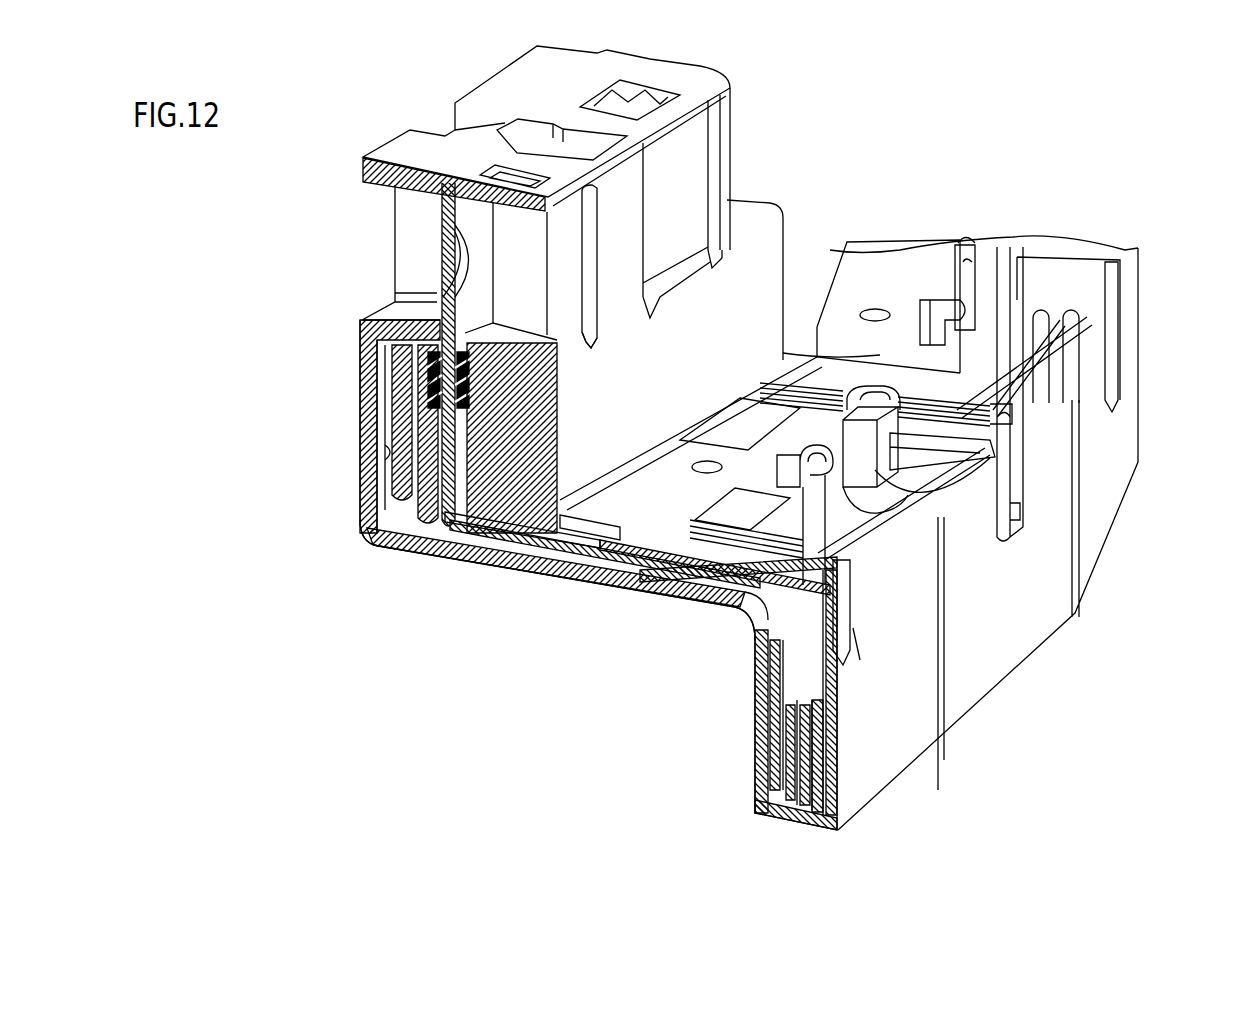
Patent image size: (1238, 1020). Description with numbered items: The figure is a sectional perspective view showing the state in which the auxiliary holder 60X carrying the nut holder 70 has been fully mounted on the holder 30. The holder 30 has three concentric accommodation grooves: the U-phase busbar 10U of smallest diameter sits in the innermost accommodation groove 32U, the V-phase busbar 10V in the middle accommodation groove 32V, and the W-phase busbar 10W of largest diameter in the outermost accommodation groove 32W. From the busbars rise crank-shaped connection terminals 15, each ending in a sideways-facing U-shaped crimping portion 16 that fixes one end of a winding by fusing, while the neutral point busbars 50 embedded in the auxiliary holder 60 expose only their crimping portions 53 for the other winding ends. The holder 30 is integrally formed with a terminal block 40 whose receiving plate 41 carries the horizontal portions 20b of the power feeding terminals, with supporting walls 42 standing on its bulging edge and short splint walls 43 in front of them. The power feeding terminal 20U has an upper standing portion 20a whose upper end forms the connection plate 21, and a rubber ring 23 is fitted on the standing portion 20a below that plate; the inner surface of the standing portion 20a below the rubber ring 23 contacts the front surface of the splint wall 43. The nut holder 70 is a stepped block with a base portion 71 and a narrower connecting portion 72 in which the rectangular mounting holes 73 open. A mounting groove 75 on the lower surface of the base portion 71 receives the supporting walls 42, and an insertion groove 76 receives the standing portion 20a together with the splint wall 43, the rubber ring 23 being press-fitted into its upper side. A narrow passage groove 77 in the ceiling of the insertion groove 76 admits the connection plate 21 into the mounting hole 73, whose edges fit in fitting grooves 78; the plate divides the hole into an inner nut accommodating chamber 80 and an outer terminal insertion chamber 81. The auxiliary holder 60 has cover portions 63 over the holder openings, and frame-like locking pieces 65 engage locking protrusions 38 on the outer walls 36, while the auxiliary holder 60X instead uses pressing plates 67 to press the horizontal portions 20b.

The U-phase busbar 10U is at (772, 737).
The V-phase busbar 10V is at (797, 765).
The W-phase busbar 10W is at (758, 806).
The connection terminal 15 is at (967, 377).
The crimping portion 16 is at (933, 308).
The standing portion 20a is at (450, 527).
The horizontal portion 20b is at (677, 575).
The power feeding terminal 20U is at (550, 545).
The connection plate 21 is at (467, 218).
The rubber ring 23 is at (375, 352).
The holder 30 is at (1136, 600).
The innermost accommodation groove 32U is at (768, 694).
The middle accommodation groove 32V is at (830, 723).
The outermost accommodation groove 32W is at (813, 733).
The outer wall 36 is at (1034, 628).
The locking protrusion 38 is at (858, 650).
The terminal block 40 is at (404, 581).
The receiving plate 41 is at (630, 590).
The supporting wall 42 is at (380, 410).
The splint wall 43 is at (410, 493).
The neutral point busbar 50 is at (603, 533).
The crimping portion 53 is at (978, 237).
The auxiliary holder 60 is at (903, 253).
The auxiliary holder 60X is at (535, 552).
The cover portion 63 is at (1075, 297).
The locking piece 65 is at (1122, 357).
The pressing plate 67 is at (723, 578).
The nut holder 70 is at (790, 230).
The base portion 71 is at (805, 250).
The connecting portion 72 is at (668, 72).
The mounting hole 73 is at (677, 182).
The mounting groove 75 is at (388, 453).
The insertion groove 76 is at (402, 556).
The passage groove 77 is at (440, 317).
The fitting groove 78 is at (416, 176).
The nut accommodating chamber 80 is at (417, 235).
The terminal insertion chamber 81 is at (609, 344).